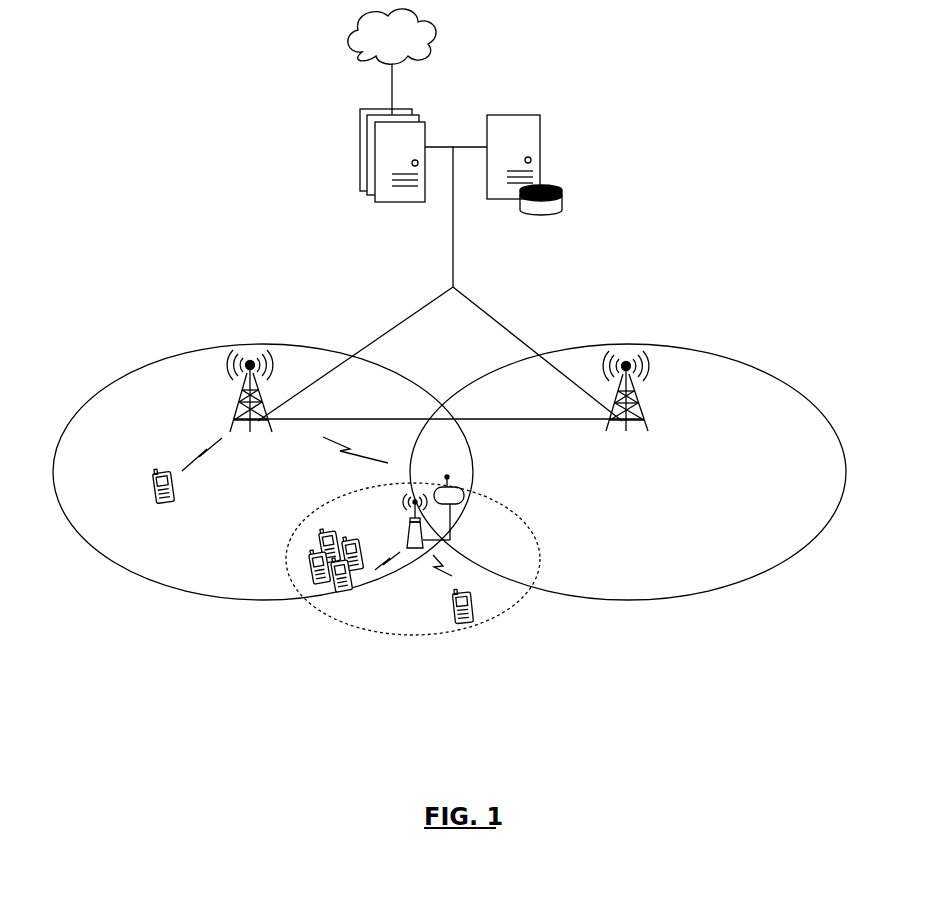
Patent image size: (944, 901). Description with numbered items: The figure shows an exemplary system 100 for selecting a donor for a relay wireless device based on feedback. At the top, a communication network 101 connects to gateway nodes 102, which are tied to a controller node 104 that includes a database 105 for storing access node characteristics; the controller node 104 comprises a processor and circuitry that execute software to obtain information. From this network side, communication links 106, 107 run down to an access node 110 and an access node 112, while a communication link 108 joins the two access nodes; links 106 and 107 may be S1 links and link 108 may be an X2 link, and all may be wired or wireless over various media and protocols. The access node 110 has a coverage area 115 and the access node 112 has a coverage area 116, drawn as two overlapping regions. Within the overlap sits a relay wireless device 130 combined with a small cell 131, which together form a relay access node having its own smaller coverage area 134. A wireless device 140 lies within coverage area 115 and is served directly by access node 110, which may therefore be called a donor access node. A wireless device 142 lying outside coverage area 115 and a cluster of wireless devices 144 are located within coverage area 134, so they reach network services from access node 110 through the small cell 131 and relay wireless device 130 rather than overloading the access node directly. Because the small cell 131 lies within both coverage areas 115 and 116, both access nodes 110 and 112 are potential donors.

The system 100 is at (482, 64).
The communication network 101 is at (378, 47).
The gateway nodes 102 is at (358, 118).
The controller node 104 is at (542, 132).
The database 105 is at (560, 184).
The communication link 106 is at (395, 323).
The communication link 107 is at (492, 313).
The communication link 108 is at (390, 417).
The access node 110 is at (257, 428).
The access node 112 is at (626, 428).
The coverage area 115 is at (207, 347).
The coverage area 116 is at (583, 347).
The relay wireless device 130 is at (466, 483).
The small cell 131 is at (413, 501).
The coverage area 134 is at (437, 637).
The wireless device 140 is at (150, 490).
The wireless device 142 is at (457, 592).
The wireless devices 144 is at (349, 595).